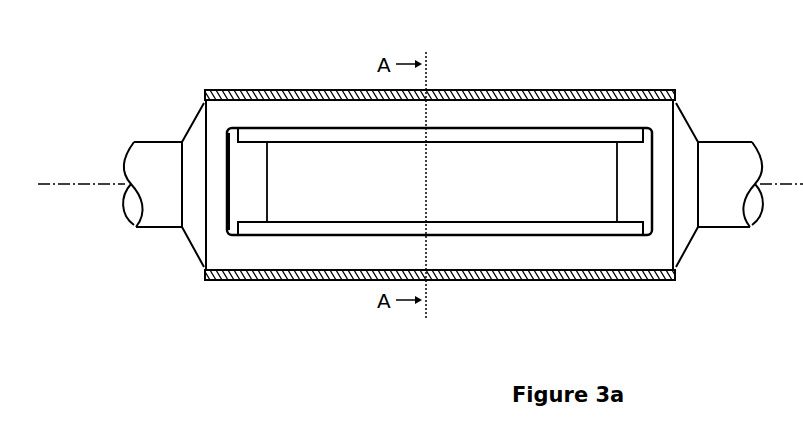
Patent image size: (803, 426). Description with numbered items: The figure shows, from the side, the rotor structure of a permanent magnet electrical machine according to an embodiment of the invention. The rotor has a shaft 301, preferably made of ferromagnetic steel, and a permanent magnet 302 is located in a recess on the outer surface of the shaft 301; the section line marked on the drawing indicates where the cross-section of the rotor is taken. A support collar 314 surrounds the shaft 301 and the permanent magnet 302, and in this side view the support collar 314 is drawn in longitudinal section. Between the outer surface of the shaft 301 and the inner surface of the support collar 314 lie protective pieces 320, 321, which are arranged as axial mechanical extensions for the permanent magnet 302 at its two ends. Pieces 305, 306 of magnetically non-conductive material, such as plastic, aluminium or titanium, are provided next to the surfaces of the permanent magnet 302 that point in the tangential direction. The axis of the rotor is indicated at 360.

The shaft 301 is at (686, 115).
The permanent magnet 302 is at (550, 193).
The piece of magnetically non-conductive material 305 is at (262, 134).
The piece of magnetically non-conductive material 306 is at (307, 228).
The support collar 314 is at (582, 90).
The protective piece 320 is at (253, 208).
The protective piece 321 is at (633, 205).
The central axis 360 is at (50, 185).